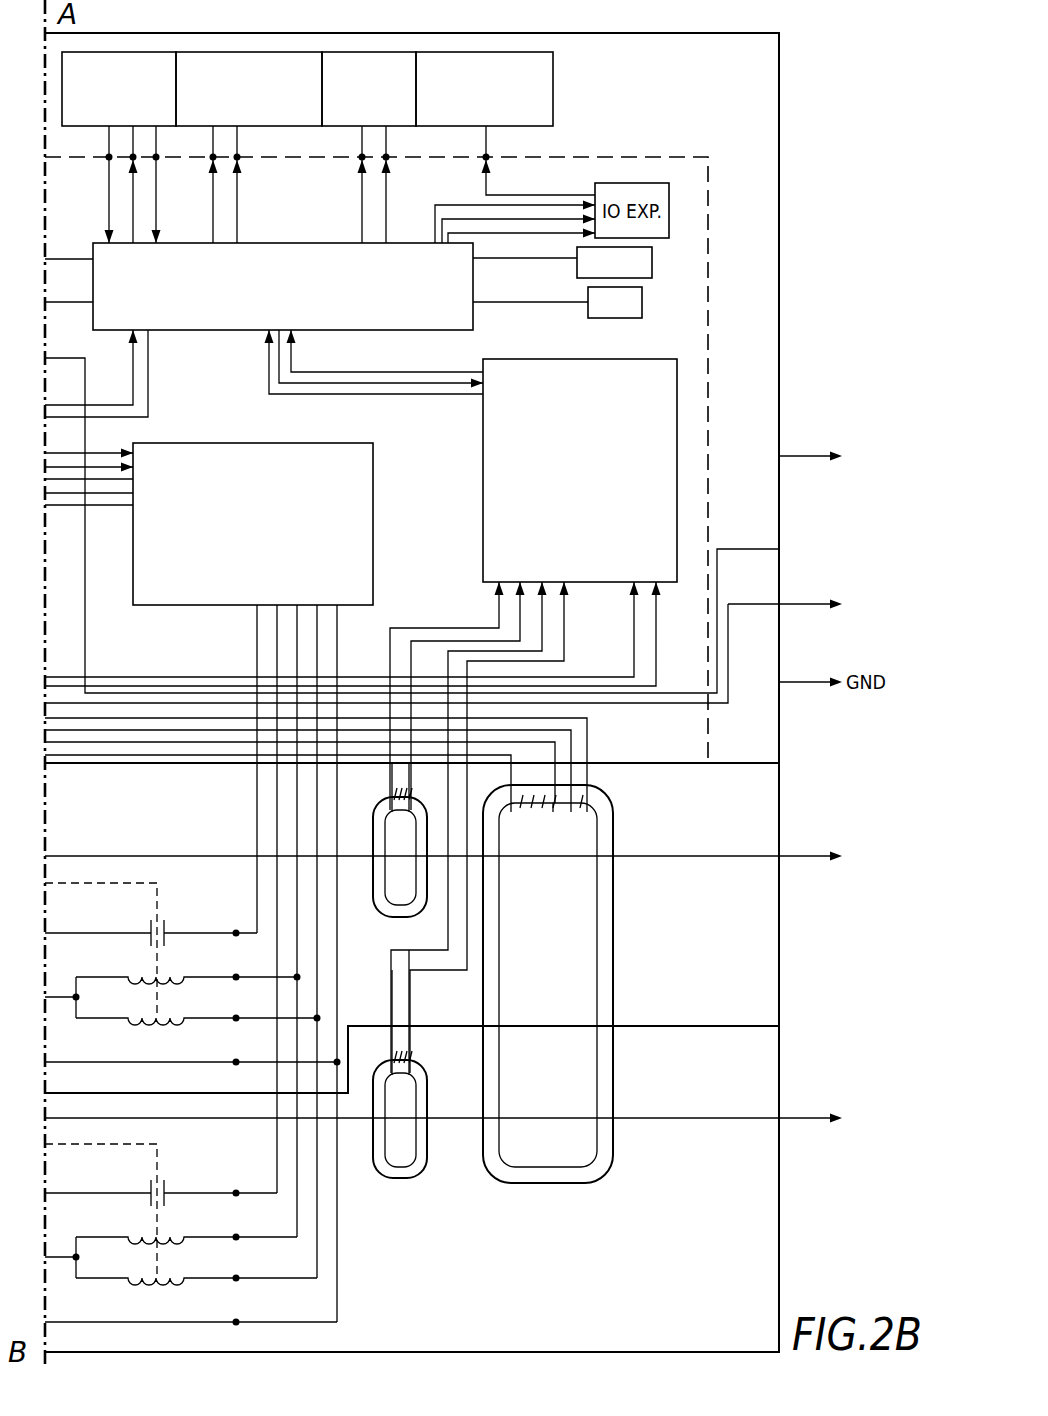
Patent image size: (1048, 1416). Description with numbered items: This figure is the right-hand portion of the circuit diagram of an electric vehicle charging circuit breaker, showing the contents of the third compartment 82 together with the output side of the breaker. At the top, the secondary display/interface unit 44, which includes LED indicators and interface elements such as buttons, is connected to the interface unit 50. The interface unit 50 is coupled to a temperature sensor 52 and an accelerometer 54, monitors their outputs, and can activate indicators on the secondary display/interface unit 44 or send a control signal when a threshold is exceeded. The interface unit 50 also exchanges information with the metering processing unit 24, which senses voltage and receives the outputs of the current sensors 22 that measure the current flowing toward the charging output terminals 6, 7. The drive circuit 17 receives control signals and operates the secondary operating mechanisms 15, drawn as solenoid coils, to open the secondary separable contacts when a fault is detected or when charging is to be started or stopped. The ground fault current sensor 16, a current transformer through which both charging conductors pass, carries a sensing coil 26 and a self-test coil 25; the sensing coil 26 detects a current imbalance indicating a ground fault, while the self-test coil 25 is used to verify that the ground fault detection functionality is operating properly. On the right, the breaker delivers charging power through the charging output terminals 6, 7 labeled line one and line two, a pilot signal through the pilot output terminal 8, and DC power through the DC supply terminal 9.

The secondary display/interface unit 44 is at (553, 78).
The interface unit 50 is at (295, 243).
The accelerometer 54 is at (652, 262).
The temperature sensor 52 is at (642, 299).
The metering processing unit 24 is at (653, 359).
The third compartment 82 is at (748, 339).
The DC supply terminal 9 is at (779, 456).
The pilot output terminal 8 is at (779, 604).
The drive circuit 17 is at (373, 449).
The secondary operating mechanisms 15 is at (182, 962).
The current sensors 22 is at (378, 912).
The sensing coil 26 is at (523, 810).
The self-test coil 25 is at (577, 806).
The charging output terminal 7 is at (779, 858).
The charging output terminal 6 is at (779, 1116).
The ground fault current sensor 16 is at (605, 1178).